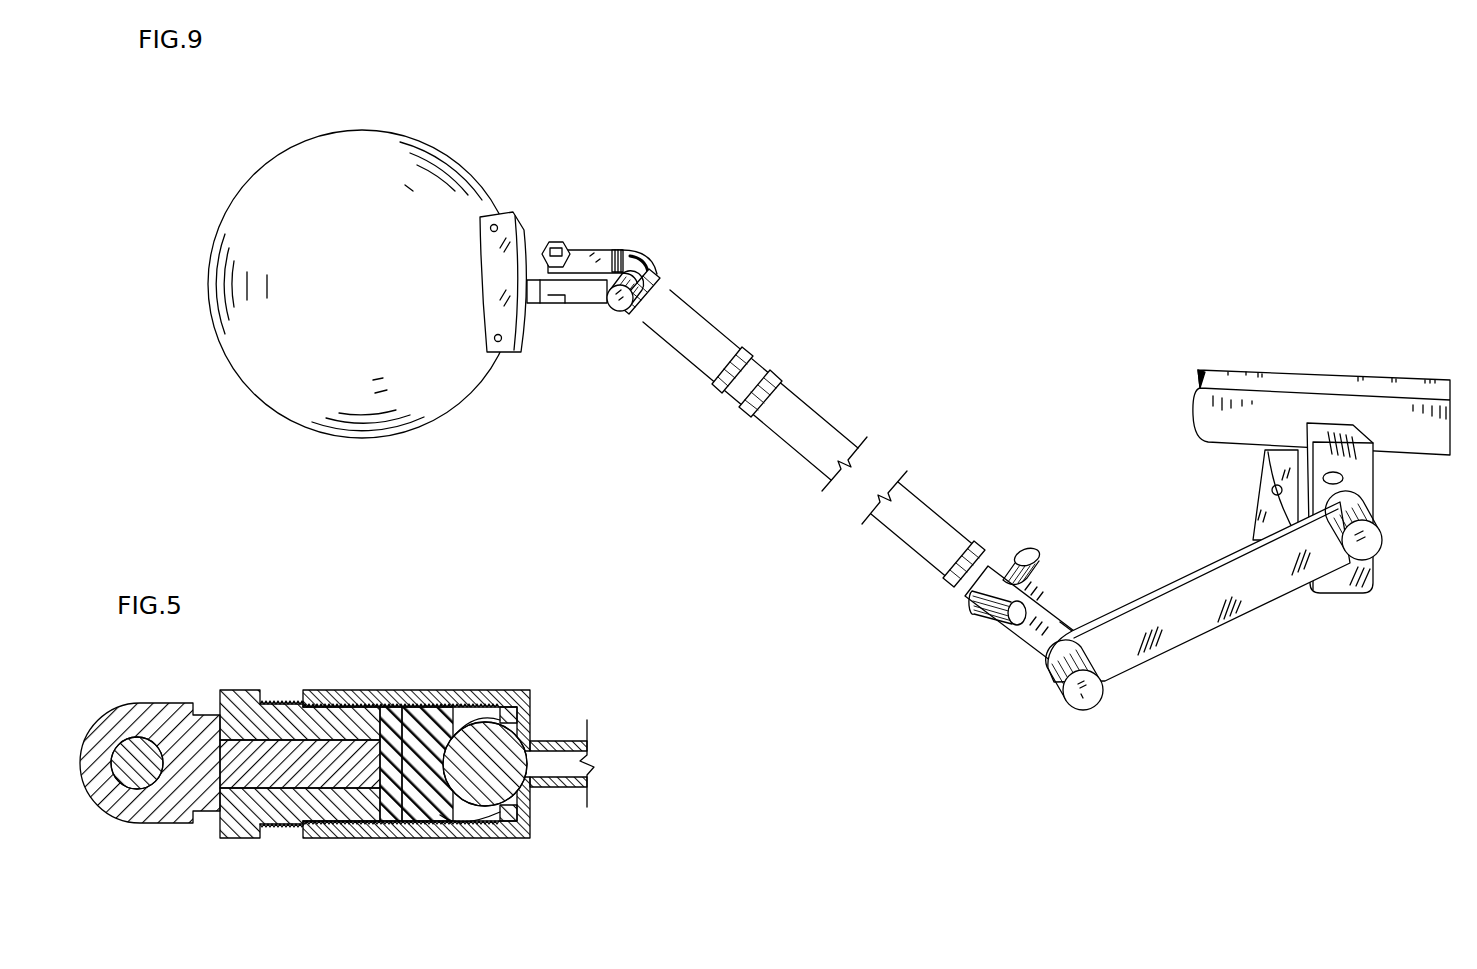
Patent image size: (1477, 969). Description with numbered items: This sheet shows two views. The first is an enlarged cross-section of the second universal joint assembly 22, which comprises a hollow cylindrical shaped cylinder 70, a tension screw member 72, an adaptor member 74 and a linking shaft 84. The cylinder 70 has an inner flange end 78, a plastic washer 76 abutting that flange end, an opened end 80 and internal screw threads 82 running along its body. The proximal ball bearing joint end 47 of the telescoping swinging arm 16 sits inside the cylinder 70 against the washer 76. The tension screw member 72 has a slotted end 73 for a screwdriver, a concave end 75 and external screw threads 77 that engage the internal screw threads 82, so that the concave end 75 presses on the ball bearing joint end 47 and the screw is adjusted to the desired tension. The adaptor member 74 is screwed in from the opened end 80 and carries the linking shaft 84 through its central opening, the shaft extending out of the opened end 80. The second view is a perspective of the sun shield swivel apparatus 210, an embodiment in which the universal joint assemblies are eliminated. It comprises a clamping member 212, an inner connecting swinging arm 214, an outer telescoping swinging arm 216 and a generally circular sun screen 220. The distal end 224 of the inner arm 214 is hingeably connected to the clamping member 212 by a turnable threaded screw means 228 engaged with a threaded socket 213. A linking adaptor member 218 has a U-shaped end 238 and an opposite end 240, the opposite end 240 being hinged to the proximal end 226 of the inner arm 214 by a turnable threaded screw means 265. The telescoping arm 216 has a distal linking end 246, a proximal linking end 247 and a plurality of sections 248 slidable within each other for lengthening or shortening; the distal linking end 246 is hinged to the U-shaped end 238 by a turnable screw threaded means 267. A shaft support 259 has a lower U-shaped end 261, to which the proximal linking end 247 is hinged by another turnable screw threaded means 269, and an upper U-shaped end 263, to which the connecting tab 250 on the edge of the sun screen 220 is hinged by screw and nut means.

In FIG. 9, the sun screen 220 is at (410, 437).
In FIG. 9, the connecting tab 250 is at (540, 302).
In FIG. 9, the upper U-shaped end 263 is at (600, 251).
In FIG. 9, the shaft support 259 is at (636, 234).
In FIG. 9, the lower U-shaped end 261 is at (650, 260).
In FIG. 9, the proximal linking end 247 is at (665, 282).
In FIG. 9, the turnable screw threaded means 269 is at (620, 306).
In FIG. 9, the outer telescoping connecting swinging rod or arm 216 is at (840, 414).
In FIG. 9, the plurality of sections 248 is at (787, 427).
In FIG. 9, the turnable screw threaded means 267 is at (1027, 550).
In FIG. 9, the linking adaptor member 218 is at (1068, 594).
In FIG. 9, the opposite end 240 is at (1078, 618).
In FIG. 9, the distal linking end 246 is at (973, 602).
In FIG. 9, the U-shaped end 238 is at (985, 622).
In FIG. 9, the threaded socket 213 is at (1328, 473).
In FIG. 9, the clamping member 212 is at (1409, 467).
In FIG. 9, the turnable threaded screw means 228 is at (1368, 547).
In FIG. 9, the distal end 224 is at (1323, 598).
In FIG. 9, the sun shield swivel apparatus 210 is at (1284, 650).
In FIG. 9, the inner connecting swinging rod or arm 214 is at (1170, 578).
In FIG. 9, the proximal end 226 is at (1113, 670).
In FIG. 9, the turnable threaded screw means 265 is at (1080, 708).
In FIG. 5, the linking shaft 84 is at (143, 692).
In FIG. 5, the adaptor member 74 is at (249, 675).
In FIG. 5, the opened end 80 is at (300, 828).
In FIG. 5, the second universal joint assembly 22 is at (377, 646).
In FIG. 5, the slotted end 73 is at (400, 707).
In FIG. 5, the external screw threads 77 is at (430, 707).
In FIG. 5, the concave end 75 is at (475, 705).
In FIG. 5, the proximal ball bearing joint end 47 is at (487, 733).
In FIG. 5, the inner flange end 78 is at (530, 737).
In FIG. 5, the hollow cylindrical shaped cylinder 70 is at (385, 851).
In FIG. 5, the tension screw member 72 is at (440, 840).
In FIG. 5, the internal screw threads 82 is at (478, 823).
In FIG. 5, the plastic washer 76 is at (510, 810).
In FIG. 5, the telescoping swinging arm 16 is at (574, 804).